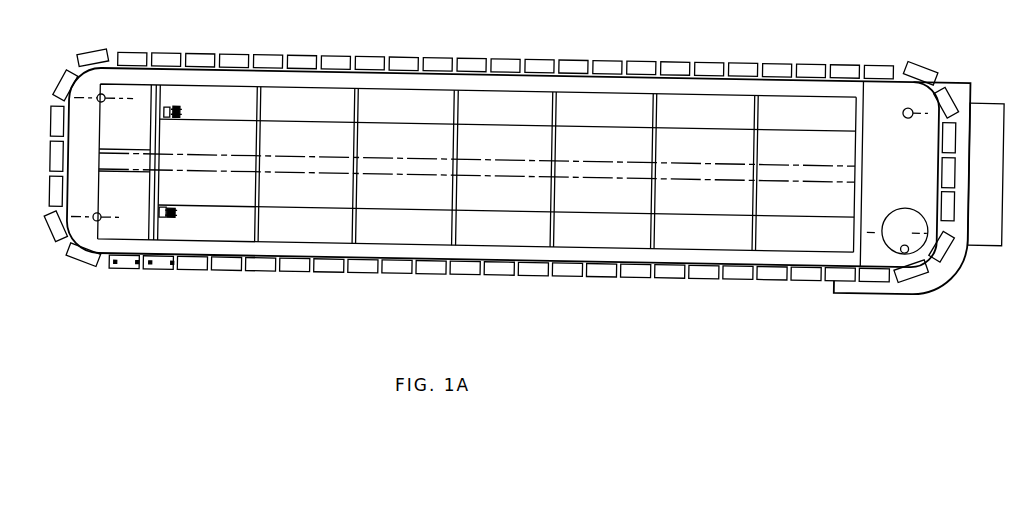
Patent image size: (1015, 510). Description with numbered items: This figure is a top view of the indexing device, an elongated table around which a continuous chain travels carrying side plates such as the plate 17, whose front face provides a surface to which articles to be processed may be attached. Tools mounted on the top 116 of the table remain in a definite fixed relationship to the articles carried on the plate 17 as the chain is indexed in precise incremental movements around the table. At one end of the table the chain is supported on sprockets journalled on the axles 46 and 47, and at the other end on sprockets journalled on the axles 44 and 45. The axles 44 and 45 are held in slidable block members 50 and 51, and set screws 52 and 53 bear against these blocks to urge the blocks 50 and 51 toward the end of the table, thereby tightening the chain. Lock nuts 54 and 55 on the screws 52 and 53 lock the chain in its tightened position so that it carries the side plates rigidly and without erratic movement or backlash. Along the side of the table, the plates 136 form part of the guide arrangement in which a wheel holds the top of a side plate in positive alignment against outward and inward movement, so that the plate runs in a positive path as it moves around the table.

The top of the table 116 is at (282, 245).
The plate 17 is at (304, 264).
The plates 136 is at (120, 257).
The axle 44 is at (104, 101).
The axle 45 is at (107, 218).
The axle 46 is at (902, 99).
The axle 47 is at (908, 226).
The slidable block member 50 is at (140, 132).
The slidable block member 51 is at (143, 185).
The set screw 52 is at (180, 110).
The set screw 53 is at (180, 210).
The lock nut 54 is at (174, 104).
The lock nut 55 is at (168, 214).